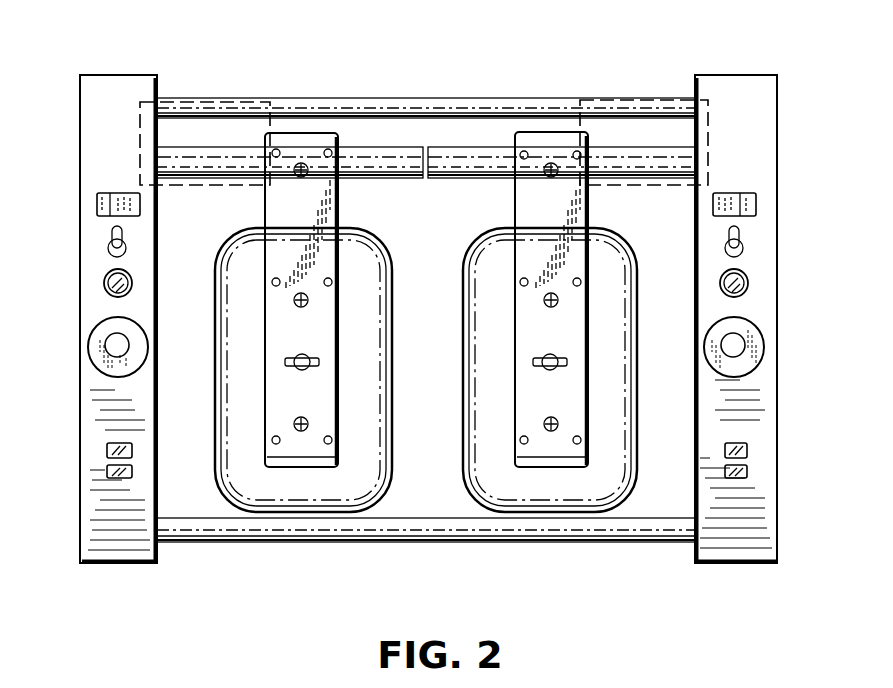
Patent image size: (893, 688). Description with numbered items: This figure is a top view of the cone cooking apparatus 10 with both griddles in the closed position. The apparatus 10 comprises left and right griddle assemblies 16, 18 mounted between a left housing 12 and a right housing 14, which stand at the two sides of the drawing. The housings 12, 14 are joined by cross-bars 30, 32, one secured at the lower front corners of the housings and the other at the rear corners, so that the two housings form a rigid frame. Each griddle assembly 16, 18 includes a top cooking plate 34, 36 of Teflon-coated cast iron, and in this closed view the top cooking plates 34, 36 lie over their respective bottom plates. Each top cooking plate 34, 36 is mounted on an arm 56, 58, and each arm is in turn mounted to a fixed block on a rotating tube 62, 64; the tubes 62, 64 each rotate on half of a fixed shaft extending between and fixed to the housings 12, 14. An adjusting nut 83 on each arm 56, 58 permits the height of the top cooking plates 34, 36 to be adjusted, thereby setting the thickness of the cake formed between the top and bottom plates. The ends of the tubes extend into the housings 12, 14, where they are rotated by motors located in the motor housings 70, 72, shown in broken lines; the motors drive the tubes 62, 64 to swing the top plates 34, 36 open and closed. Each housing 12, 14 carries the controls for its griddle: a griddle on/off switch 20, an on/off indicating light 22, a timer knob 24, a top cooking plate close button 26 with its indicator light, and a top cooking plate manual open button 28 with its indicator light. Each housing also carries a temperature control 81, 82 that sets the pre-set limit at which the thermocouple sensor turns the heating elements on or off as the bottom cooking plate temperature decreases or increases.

The cone cooking apparatus 10 is at (138, 55).
The left housing 12 is at (132, 576).
The right housing 14 is at (760, 575).
The left griddle assembly 16 is at (380, 520).
The right griddle assembly 18 is at (645, 510).
The griddle on/off switch 20 is at (103, 243).
The on/off indicating light 22 is at (107, 276).
The timer knob 24 is at (105, 339).
The top cooking plate close button 26 is at (747, 450).
The top cooking plate manual open button 28 is at (747, 471).
The cross-bar 30 is at (326, 542).
The cross-bar 32 is at (435, 90).
The top cooking plate 34 is at (217, 440).
The top cooking plate 36 is at (463, 445).
The arm 56 is at (281, 207).
The arm 58 is at (577, 208).
The rotating tube 62 is at (404, 172).
The rotating tube 64 is at (472, 165).
The motor housing 70 is at (217, 128).
The motor housing 72 is at (638, 123).
The temperature control 81 is at (97, 204).
The temperature control 82 is at (755, 205).
The adjusting nut 83 is at (313, 351).